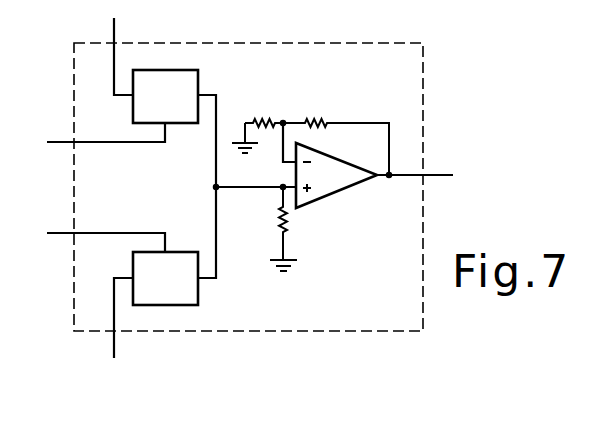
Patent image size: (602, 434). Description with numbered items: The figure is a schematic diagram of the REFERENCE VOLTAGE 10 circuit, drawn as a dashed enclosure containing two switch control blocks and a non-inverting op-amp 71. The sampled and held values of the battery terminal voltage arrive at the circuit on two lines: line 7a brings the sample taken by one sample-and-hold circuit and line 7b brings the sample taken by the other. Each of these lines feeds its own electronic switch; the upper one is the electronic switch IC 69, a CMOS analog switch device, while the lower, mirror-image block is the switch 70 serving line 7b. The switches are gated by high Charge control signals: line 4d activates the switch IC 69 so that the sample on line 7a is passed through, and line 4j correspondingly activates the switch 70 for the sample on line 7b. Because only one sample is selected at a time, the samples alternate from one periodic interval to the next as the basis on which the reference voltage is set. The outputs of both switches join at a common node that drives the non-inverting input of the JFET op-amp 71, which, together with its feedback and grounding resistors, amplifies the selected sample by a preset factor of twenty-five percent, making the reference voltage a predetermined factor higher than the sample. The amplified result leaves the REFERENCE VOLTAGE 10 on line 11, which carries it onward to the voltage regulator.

The REFERENCE VOLTAGE circuit 10 is at (283, 18).
The line 7a is at (115, 30).
The line 7b is at (115, 345).
The electronic switch IC 69 is at (198, 80).
The switch control block (CTRL SW) 70 is at (198, 291).
The line 4d is at (60, 141).
The line 4j is at (60, 232).
The op-amp 71 is at (332, 192).
The line 11 is at (438, 175).